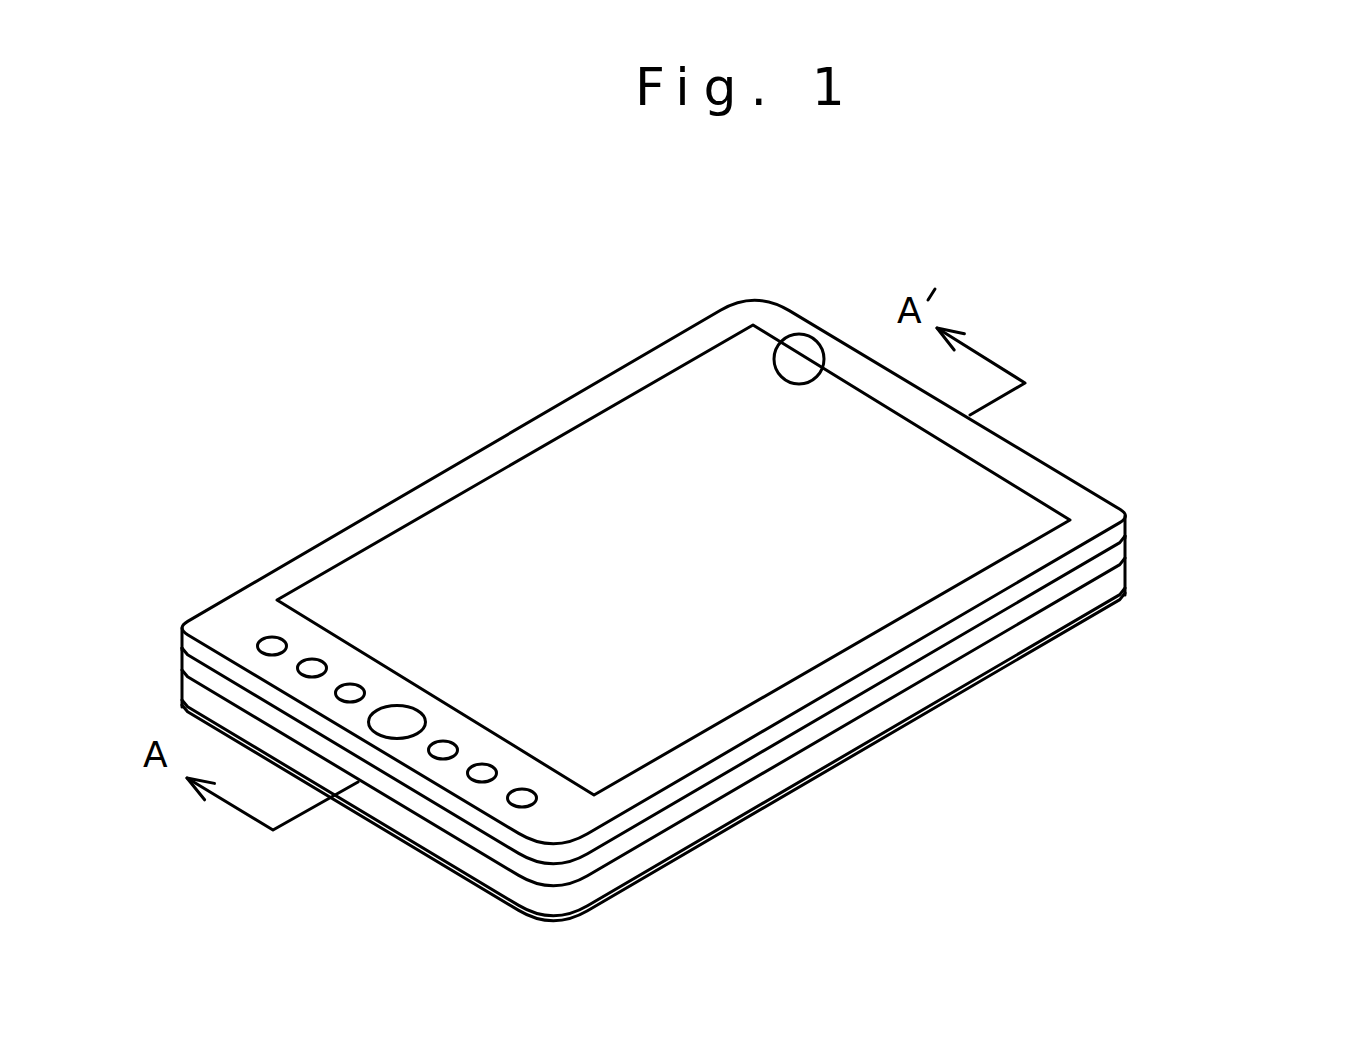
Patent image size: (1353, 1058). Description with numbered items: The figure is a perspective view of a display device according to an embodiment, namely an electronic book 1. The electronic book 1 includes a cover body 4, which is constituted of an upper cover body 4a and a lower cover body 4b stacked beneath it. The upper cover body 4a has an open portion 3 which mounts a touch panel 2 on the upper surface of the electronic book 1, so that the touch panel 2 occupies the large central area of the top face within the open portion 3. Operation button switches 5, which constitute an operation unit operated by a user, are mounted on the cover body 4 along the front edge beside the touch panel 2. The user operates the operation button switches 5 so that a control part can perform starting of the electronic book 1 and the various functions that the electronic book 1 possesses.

The electronic book 1 is at (407, 367).
The touch panel 2 is at (632, 432).
The open portion 3 is at (775, 345).
The cover body 4 is at (1283, 465).
The upper cover body 4a is at (1092, 508).
The lower cover body 4b is at (1116, 590).
The operation button switches 5 is at (352, 688).